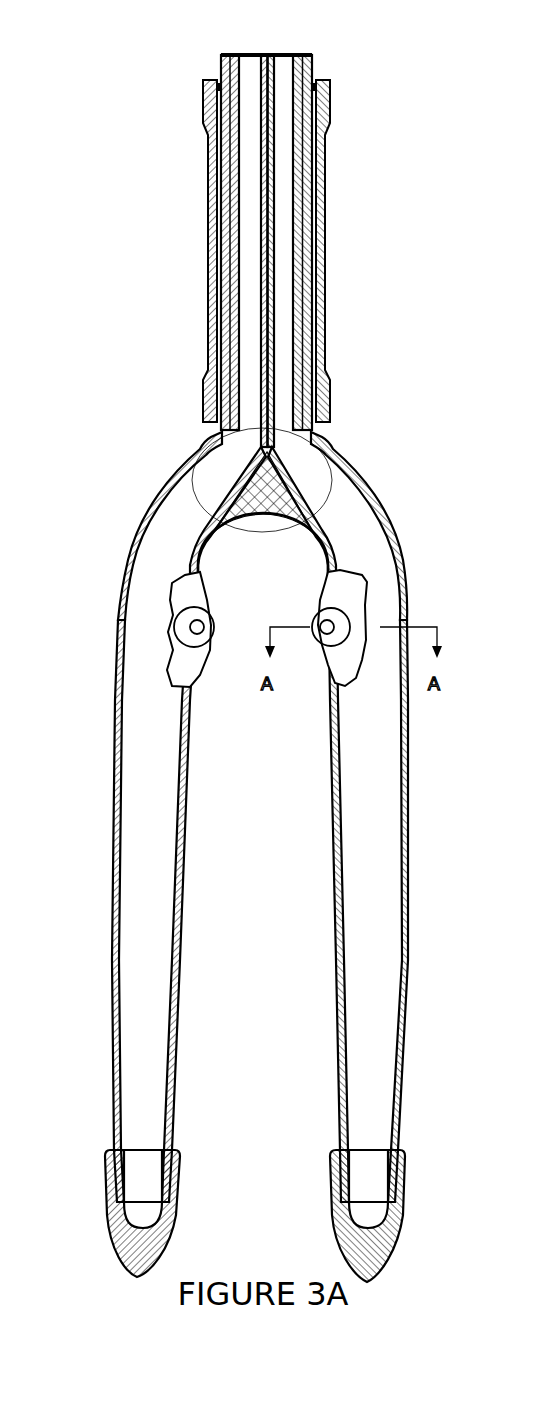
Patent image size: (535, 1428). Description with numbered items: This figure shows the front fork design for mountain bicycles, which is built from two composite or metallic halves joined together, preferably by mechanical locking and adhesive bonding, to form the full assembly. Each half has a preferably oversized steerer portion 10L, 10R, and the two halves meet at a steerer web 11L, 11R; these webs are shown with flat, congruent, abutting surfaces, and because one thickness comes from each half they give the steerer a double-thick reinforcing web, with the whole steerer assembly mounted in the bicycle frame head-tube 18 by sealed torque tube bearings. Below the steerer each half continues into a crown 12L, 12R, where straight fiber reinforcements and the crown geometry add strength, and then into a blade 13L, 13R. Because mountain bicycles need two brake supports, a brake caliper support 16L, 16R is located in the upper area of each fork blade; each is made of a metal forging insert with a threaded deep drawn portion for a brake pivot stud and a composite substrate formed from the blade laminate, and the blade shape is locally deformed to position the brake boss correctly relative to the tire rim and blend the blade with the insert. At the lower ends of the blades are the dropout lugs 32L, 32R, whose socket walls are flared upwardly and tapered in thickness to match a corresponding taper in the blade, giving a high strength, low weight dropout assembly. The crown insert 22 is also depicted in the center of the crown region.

The steerer portion 10L is at (222, 55).
The steerer portion 10R is at (312, 58).
The steerer web 11L is at (260, 181).
The steerer web 11R is at (273, 183).
The bicycle frame head-tube 18 is at (210, 265).
The crown insert 22 is at (298, 477).
The crown 12L is at (152, 483).
The crown 12R is at (373, 482).
The blade 13L is at (113, 838).
The blade 13R is at (407, 865).
The brake caliper support 16L is at (190, 626).
The brake caliper support 16R is at (333, 630).
The dropout lug 32L is at (107, 1203).
The dropout lug 32R is at (403, 1202).